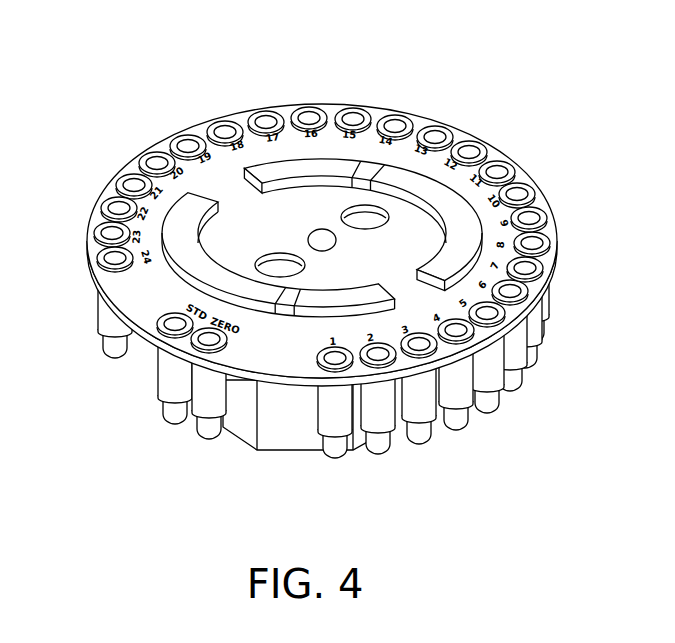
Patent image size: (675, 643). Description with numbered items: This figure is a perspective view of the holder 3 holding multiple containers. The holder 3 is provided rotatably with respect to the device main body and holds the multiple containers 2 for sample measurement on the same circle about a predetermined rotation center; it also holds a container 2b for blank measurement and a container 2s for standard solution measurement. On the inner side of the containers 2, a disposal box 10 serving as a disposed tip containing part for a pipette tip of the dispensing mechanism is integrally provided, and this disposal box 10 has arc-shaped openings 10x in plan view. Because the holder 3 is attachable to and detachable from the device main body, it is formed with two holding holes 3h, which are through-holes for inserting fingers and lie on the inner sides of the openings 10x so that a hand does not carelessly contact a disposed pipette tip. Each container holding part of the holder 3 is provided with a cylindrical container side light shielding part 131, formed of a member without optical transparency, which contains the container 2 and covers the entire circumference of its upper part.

The container 2 is at (319, 288).
The container for standard solution measurement 2s is at (170, 415).
The container for blank measurement 2b is at (207, 432).
The holder 3 is at (288, 106).
The holding hole 3h is at (292, 265).
The disposal box 10 is at (470, 133).
The opening 10x is at (366, 157).
The container side light shielding part 131 is at (95, 318).